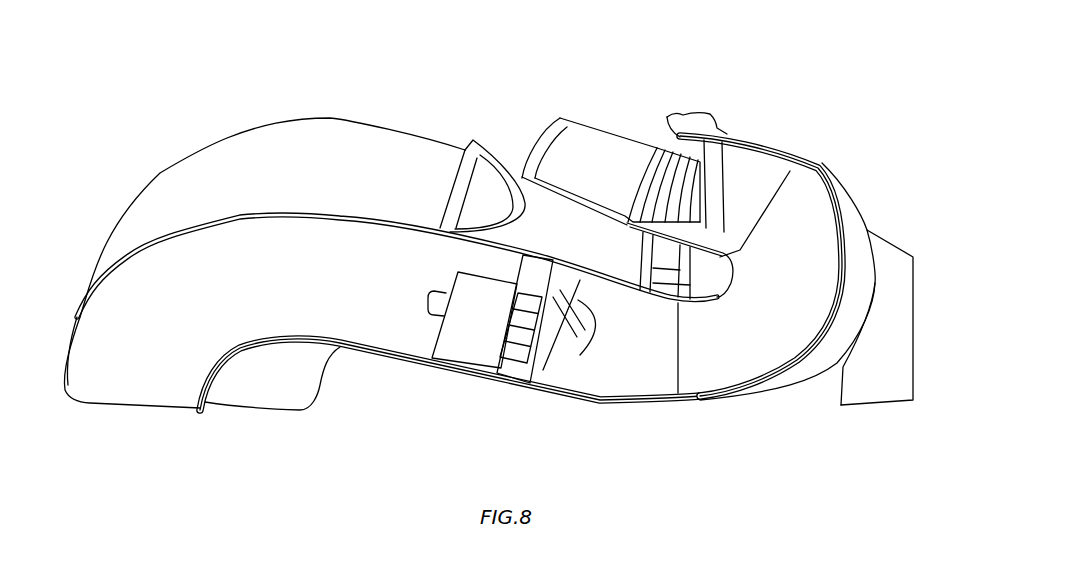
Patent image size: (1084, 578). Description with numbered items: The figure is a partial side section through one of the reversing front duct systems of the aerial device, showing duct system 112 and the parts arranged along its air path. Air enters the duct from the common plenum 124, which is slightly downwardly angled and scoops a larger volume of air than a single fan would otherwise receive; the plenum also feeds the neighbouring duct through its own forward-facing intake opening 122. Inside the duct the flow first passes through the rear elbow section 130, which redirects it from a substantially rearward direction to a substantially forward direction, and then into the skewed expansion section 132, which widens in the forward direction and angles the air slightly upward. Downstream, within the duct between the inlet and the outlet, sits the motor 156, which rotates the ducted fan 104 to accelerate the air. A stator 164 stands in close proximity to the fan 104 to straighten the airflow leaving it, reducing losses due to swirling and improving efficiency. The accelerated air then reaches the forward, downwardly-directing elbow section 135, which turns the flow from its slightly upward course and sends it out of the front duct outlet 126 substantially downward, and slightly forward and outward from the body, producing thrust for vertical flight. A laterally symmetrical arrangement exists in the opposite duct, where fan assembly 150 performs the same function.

The ducted fan 104 is at (557, 360).
The first reversing front duct system 112 is at (395, 355).
The intake opening 122 is at (765, 209).
The plenum 124 is at (666, 116).
The front duct outlet 126 is at (137, 401).
The rear elbow section 130 is at (833, 330).
The skewed expansion section 132 is at (666, 357).
The forward, downwardly-directing elbow section 135 is at (246, 302).
The fan assembly 150 is at (498, 270).
The electric motor 156 is at (481, 322).
The stator 164 is at (513, 372).